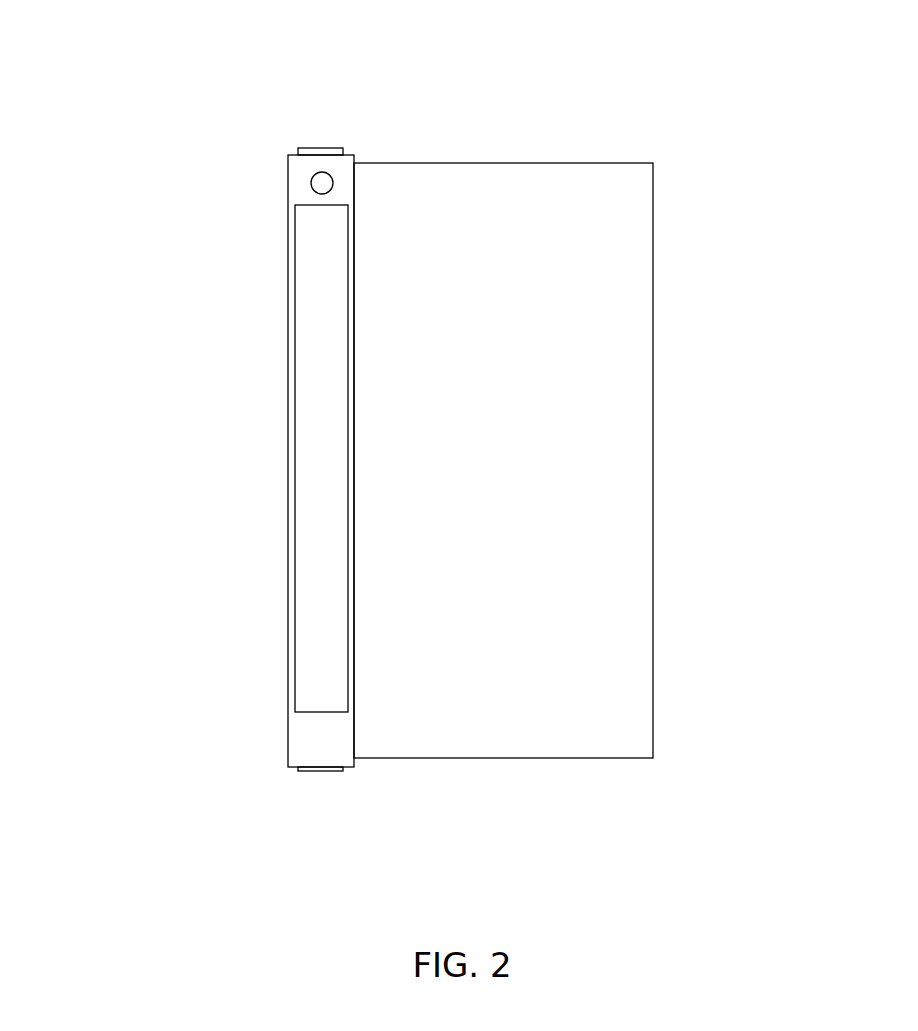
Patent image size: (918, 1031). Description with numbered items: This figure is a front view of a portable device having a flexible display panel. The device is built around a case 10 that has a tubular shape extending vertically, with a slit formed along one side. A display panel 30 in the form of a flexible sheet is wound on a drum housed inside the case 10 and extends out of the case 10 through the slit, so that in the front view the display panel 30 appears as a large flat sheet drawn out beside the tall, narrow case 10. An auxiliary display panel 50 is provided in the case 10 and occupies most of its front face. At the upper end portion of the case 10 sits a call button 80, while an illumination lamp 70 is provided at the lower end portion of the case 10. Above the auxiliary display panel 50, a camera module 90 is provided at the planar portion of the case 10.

The case 10 is at (288, 375).
The display panel 30 is at (653, 400).
The auxiliary display panel 50 is at (295, 300).
The illumination lamp 70 is at (320, 771).
The call button 80 is at (321, 147).
The camera module 90 is at (311, 181).